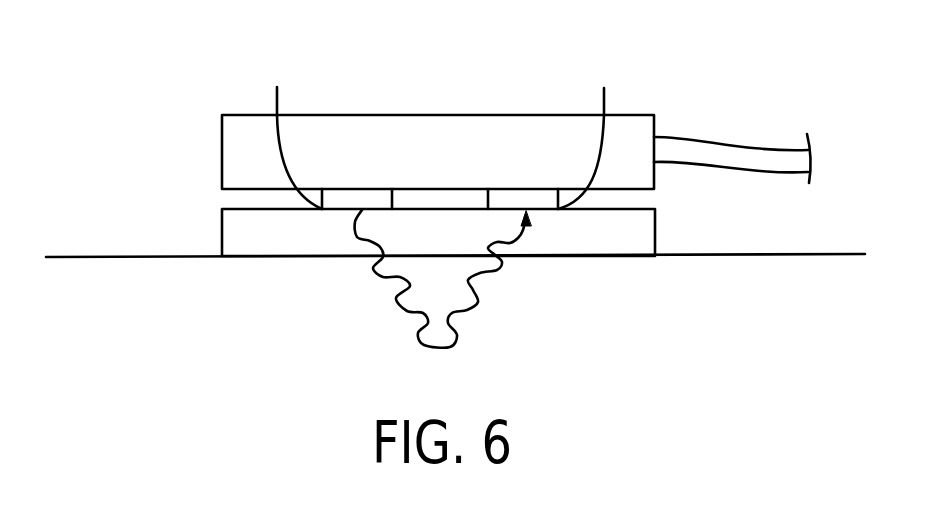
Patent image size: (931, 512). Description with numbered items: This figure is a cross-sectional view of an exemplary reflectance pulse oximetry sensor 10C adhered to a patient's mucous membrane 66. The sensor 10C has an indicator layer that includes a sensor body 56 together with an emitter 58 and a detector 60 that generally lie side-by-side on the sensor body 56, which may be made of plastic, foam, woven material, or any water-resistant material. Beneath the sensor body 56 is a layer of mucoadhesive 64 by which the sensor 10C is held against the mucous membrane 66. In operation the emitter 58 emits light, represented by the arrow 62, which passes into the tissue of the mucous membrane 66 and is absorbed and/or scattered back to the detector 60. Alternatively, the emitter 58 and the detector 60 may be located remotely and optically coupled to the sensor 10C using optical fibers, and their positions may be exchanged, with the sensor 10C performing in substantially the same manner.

The reflectance pulse oximetry sensor 10C is at (141, 110).
The sensor body 56 is at (432, 125).
The emitter 58 is at (291, 129).
The detector 60 is at (590, 130).
The arrow 62 is at (382, 283).
The mucoadhesive 64 is at (643, 232).
The mucous membrane 66 is at (627, 313).